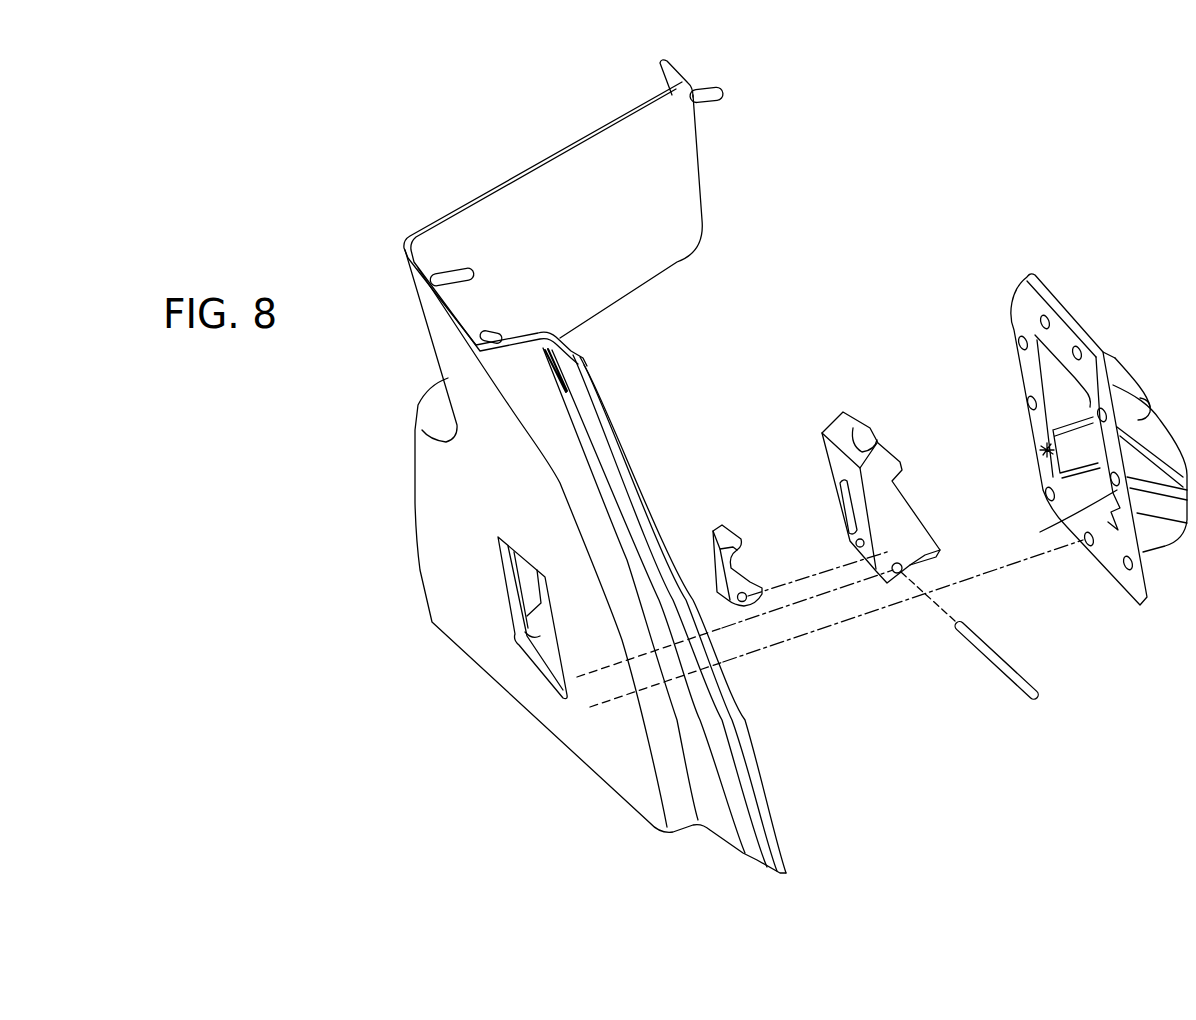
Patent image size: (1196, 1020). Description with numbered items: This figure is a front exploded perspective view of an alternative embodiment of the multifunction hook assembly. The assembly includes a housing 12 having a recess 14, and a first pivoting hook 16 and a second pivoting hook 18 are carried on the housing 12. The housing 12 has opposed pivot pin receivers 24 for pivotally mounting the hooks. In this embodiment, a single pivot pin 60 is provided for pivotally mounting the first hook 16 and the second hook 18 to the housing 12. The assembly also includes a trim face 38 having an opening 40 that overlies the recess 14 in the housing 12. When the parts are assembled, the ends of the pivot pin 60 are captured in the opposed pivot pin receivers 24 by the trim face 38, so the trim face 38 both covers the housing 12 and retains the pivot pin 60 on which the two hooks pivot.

The housing 12 is at (1063, 312).
The recess 14 is at (1055, 380).
The first pivoting hook 16 is at (895, 518).
The second pivoting hook 18 is at (733, 572).
The opposed pivot pin receivers 24 is at (1047, 450).
The trim face 38 is at (452, 578).
The opening 40 is at (540, 637).
The pivot pin 60 is at (982, 650).